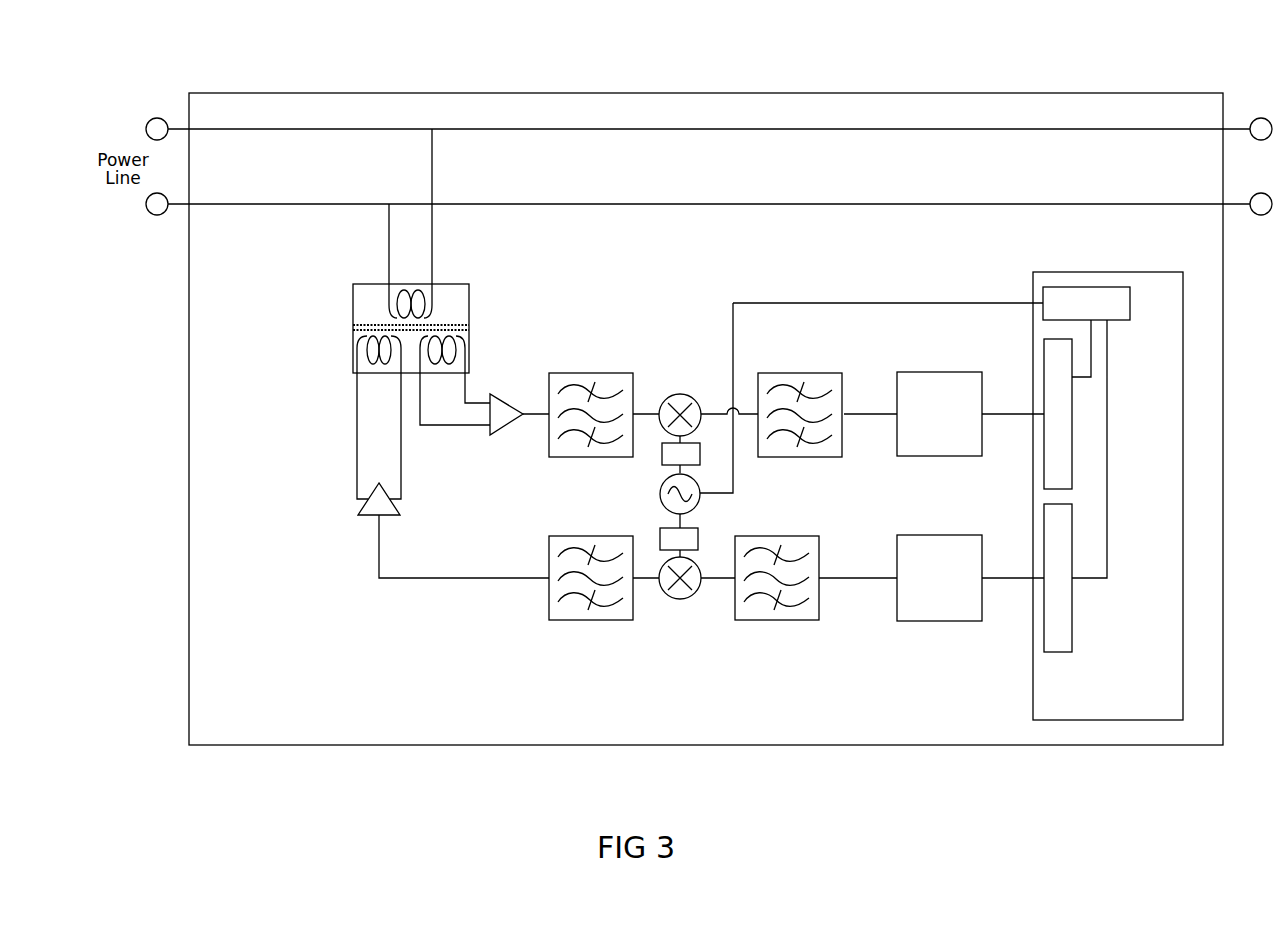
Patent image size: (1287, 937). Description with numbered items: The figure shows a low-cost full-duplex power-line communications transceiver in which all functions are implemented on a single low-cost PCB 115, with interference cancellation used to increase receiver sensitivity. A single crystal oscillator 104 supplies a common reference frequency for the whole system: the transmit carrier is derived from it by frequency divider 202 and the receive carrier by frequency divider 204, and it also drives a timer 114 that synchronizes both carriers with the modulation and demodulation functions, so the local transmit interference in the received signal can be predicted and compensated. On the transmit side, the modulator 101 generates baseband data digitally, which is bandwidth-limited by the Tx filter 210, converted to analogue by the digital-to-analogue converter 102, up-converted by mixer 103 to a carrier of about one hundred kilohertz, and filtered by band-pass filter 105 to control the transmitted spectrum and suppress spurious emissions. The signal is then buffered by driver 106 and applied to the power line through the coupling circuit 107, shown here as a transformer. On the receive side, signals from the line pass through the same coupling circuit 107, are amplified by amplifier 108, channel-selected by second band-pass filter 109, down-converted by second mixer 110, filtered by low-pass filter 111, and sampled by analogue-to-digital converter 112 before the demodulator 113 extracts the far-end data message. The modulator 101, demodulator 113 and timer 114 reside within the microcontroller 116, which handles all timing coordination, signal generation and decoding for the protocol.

The PCB 115 is at (261, 90).
The coupling circuit 107 is at (406, 279).
The driver 106 is at (369, 528).
The amplifier 108 is at (504, 441).
The second band-pass filter 109 is at (545, 448).
The band-pass filter 105 is at (586, 629).
The second mixer 110 is at (701, 394).
The frequency divider 204 is at (654, 441).
The crystal oscillator 104 is at (703, 510).
The frequency divider 202 is at (652, 552).
The mixer 103 is at (702, 600).
The low-pass filter 111 is at (826, 464).
The Tx filter 210 is at (781, 630).
The analogue-to-digital converter 112 is at (940, 369).
The Digital-to-Analogue Converter 102 is at (939, 637).
The demodulator 113 is at (1048, 337).
The modulator 101 is at (1063, 663).
The timer 114 is at (1097, 285).
The microcontroller 116 is at (1162, 375).